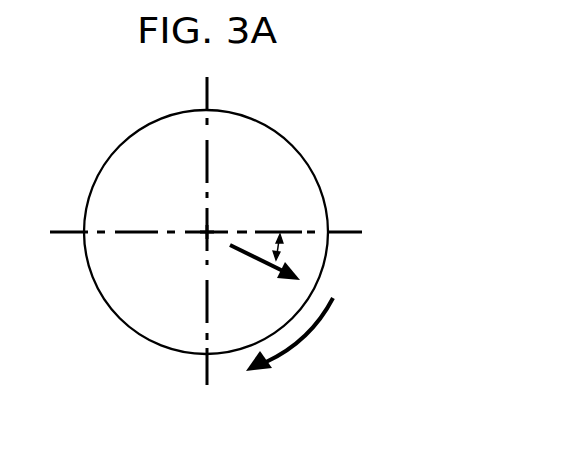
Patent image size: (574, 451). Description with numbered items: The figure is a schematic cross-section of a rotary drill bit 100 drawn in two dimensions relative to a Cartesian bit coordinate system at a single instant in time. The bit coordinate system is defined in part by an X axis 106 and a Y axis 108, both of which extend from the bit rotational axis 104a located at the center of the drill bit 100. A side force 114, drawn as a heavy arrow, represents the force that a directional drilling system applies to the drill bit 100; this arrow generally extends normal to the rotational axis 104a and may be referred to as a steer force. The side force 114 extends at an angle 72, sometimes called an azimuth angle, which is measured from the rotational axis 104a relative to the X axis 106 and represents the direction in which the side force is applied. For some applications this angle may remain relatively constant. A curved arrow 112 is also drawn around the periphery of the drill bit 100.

The rotary drill bit 100 is at (273, 117).
The Y axis 108 is at (204, 94).
The X axis 106 is at (347, 229).
The bit rotational axis 104a is at (205, 231).
The angle 72 is at (283, 251).
The side force 114 is at (258, 263).
The direction of rotation 112 is at (303, 341).